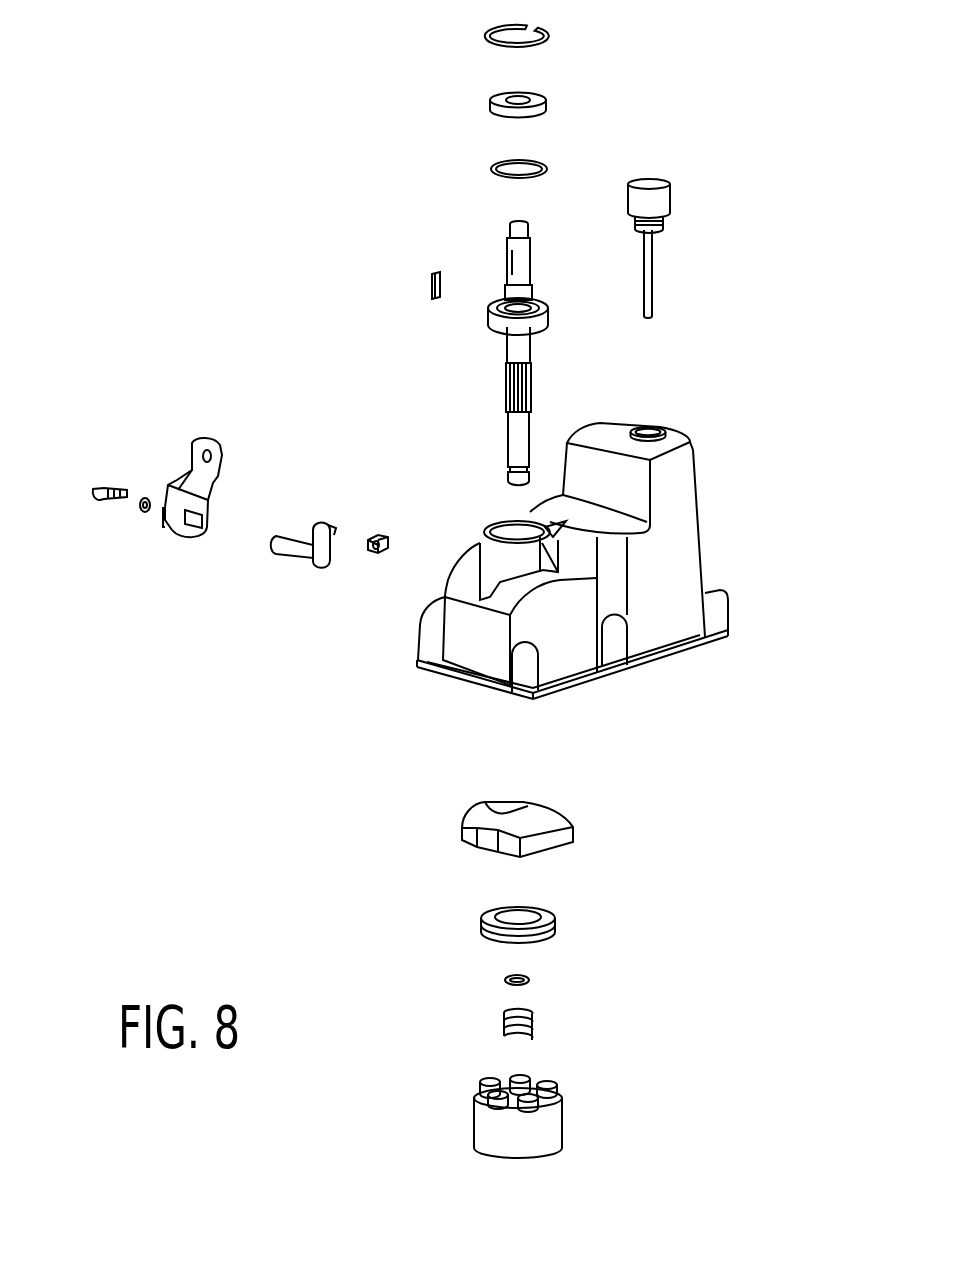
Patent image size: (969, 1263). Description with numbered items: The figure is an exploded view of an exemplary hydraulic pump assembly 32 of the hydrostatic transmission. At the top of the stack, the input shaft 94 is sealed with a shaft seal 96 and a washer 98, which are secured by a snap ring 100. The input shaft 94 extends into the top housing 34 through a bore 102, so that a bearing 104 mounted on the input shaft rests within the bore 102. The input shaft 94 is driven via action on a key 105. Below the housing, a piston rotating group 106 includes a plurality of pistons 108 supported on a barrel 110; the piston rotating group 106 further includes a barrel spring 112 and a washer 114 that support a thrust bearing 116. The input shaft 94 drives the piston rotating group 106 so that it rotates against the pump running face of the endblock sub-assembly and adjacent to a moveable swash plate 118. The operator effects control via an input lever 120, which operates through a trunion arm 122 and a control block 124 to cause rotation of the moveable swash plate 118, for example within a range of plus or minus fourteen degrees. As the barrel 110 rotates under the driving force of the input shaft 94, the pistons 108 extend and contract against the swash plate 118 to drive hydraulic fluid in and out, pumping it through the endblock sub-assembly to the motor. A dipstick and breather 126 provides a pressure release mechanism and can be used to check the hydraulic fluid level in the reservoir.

The hydraulic pump assembly 32 is at (204, 102).
The top housing 34 is at (687, 487).
The input shaft 94 is at (500, 346).
The shaft seal 96 is at (491, 170).
The washer 98 is at (490, 110).
The snap ring 100 is at (549, 40).
The bore 102 is at (509, 530).
The bearing 104 is at (543, 318).
The key 105 is at (430, 293).
The piston rotating group 106 is at (585, 1089).
The pistons 108 is at (491, 1080).
The barrel 110 is at (493, 1140).
The barrel spring 112 is at (533, 1024).
The washer 114 is at (529, 980).
The thrust bearing 116 is at (555, 925).
The moveable swash plate 118 is at (570, 827).
The input lever 120 is at (172, 482).
The trunion arm 122 is at (296, 560).
The control block 124 is at (378, 554).
The dipstick and breather 126 is at (662, 202).